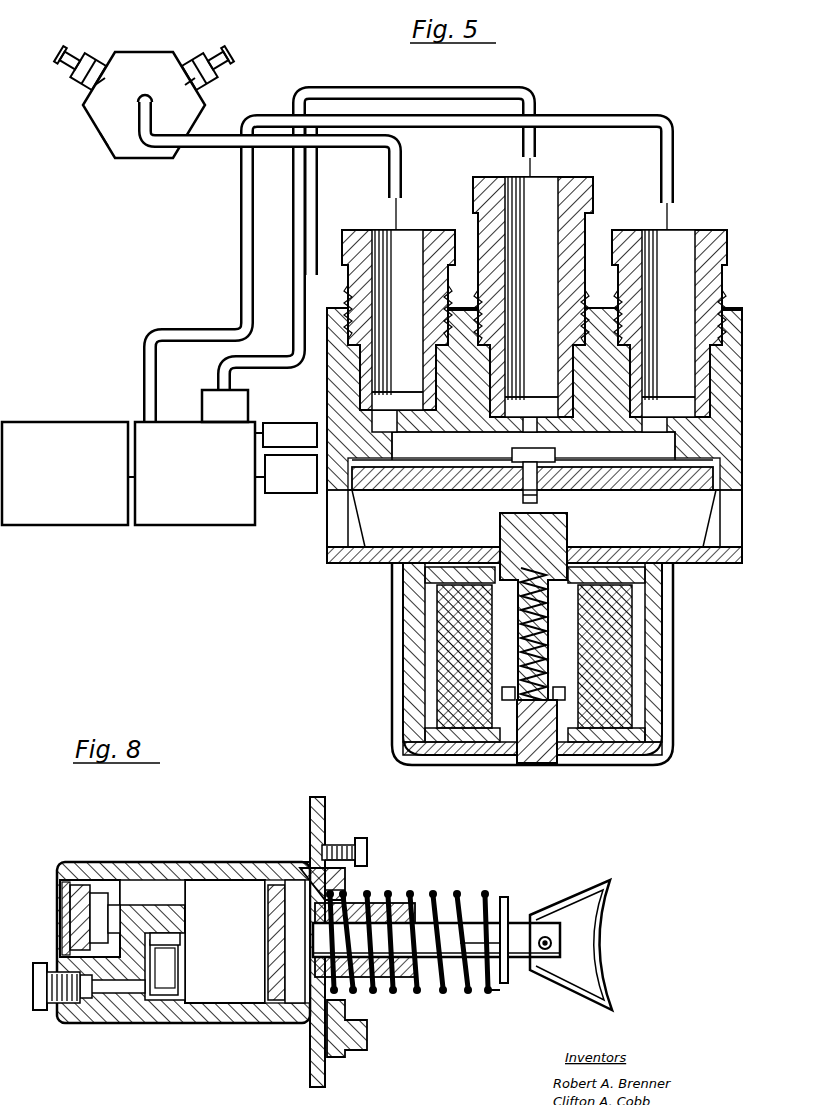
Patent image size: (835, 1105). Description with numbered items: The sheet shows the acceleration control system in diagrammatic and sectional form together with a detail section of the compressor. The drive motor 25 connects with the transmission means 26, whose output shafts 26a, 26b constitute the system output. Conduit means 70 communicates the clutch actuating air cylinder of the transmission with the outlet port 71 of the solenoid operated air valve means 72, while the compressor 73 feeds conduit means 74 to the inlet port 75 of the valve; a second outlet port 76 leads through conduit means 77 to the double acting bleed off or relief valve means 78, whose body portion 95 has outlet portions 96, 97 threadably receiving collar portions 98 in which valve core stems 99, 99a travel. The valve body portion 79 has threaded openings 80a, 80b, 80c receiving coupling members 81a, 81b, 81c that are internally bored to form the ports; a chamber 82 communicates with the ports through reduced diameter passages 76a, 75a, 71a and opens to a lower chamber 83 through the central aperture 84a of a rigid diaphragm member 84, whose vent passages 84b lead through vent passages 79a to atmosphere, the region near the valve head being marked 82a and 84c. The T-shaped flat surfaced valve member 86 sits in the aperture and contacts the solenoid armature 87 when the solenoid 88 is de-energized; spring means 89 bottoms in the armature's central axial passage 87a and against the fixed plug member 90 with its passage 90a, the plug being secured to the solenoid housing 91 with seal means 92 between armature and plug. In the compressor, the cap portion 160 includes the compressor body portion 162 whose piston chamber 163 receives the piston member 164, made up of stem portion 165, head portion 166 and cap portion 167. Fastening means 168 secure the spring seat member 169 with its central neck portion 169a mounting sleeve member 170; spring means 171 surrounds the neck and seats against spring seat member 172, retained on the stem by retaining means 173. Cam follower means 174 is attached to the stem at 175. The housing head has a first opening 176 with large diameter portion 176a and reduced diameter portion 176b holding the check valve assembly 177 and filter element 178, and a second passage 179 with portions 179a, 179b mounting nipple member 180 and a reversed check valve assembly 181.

In FIG. 5, the drive motor 25 is at (50, 422).
In FIG. 5, the transmission means 26 is at (181, 518).
In FIG. 5, the output shaft 26a is at (260, 495).
In FIG. 5, the output shaft 26b is at (262, 424).
In FIG. 5, the conduit means 70 is at (240, 283).
In FIG. 5, the outlet port 71 is at (690, 235).
In FIG. 5, the reduced diameter passage 71a is at (667, 410).
In FIG. 5, the solenoid operated air valve means 72 is at (706, 574).
In FIG. 5, the compressor 73 is at (249, 400).
In FIG. 8, the compressor 73 is at (435, 845).
In FIG. 5, the conduit means 74 is at (293, 284).
In FIG. 5, the inlet port 75 is at (548, 182).
In FIG. 5, the reduced diameter passage 75a is at (533, 410).
In FIG. 5, the second outlet port 76 is at (410, 235).
In FIG. 5, the reduced diameter passage 76a is at (400, 408).
In FIG. 5, the conduit means 77 is at (207, 148).
In FIG. 5, the double acting bleed off or relief valve means 78 is at (100, 140).
In FIG. 5, the body portion 79 is at (738, 397).
In FIG. 5, the vent passage 79a is at (742, 490).
In FIG. 5, the threaded opening 80a is at (330, 318).
In FIG. 5, the threaded opening 80b is at (478, 320).
In FIG. 5, the threaded opening 80c is at (732, 313).
In FIG. 5, the coupling member 81a is at (345, 240).
In FIG. 5, the coupling member 81b is at (484, 188).
In FIG. 5, the coupling member 81c is at (722, 242).
In FIG. 5, the chamber 82 is at (533, 446).
In FIG. 5, the passage 82a is at (522, 442).
In FIG. 5, the chamber 83 is at (534, 518).
In FIG. 5, the rigid diaphragm member 84 is at (414, 488).
In FIG. 5, the central aperture 84a is at (540, 497).
In FIG. 5, the vent passage 84b is at (707, 517).
In FIG. 5, the valve head 84c is at (556, 451).
In FIG. 5, the T-shaped flat surfaced valve member 86 is at (522, 497).
In FIG. 5, the solenoid armature 87 is at (560, 532).
In FIG. 5, the central axial passage 87a is at (515, 660).
In FIG. 5, the solenoid 88 is at (640, 657).
In FIG. 5, the spring means 89 is at (540, 763).
In FIG. 5, the fixed plug member 90 is at (565, 763).
In FIG. 5, the passage 90a is at (527, 762).
In FIG. 5, the solenoid housing 91 is at (676, 706).
In FIG. 5, the seal means 92 is at (568, 696).
In FIG. 5, the body portion 95 is at (137, 55).
In FIG. 5, the outlet portion 96 is at (88, 85).
In FIG. 5, the outlet portion 97 is at (200, 85).
In FIG. 5, the collar portion 98 is at (82, 45).
In FIG. 5, the valve core stem 99 is at (58, 42).
In FIG. 5, the valve core stem 99a is at (240, 40).
In FIG. 8, the cap portion 160 is at (186, 1025).
In FIG. 8, the compressor body portion 162 is at (195, 865).
In FIG. 8, the piston chamber 163 is at (226, 1015).
In FIG. 8, the piston member 164 is at (283, 1005).
In FIG. 8, the stem portion 165 is at (440, 982).
In FIG. 8, the head portion 166 is at (310, 845).
In FIG. 8, the cap portion 167 is at (300, 872).
In FIG. 8, the fastening means 168 is at (368, 855).
In FIG. 8, the spring seat member 169 is at (352, 1060).
In FIG. 8, the central neck portion 169a is at (380, 892).
In FIG. 8, the sleeve member 170 is at (390, 985).
In FIG. 8, the spring means 171 is at (433, 892).
In FIG. 8, the spring seat member 172 is at (487, 995).
In FIG. 8, the retaining means 173 is at (510, 975).
In FIG. 8, the cam follower means 174 is at (614, 968).
In FIG. 8, the attachment point 175 is at (545, 937).
In FIG. 8, the first opening 176 is at (115, 875).
In FIG. 8, the relatively large diameter portion 176a is at (105, 872).
In FIG. 8, the reduced diameter portion 176b is at (150, 878).
In FIG. 8, the spring loaded flat check valve assembly 177 is at (80, 897).
In FIG. 8, the filter element 178 is at (70, 925).
In FIG. 8, the second passage 179 is at (130, 993).
In FIG. 8, the relatively large diameter portion 179a is at (178, 938).
In FIG. 8, the relatively slender portion 179b is at (102, 993).
In FIG. 8, the nipple member 180 is at (40, 1010).
In FIG. 8, the spring loaded flat check valve assembly 181 is at (178, 965).